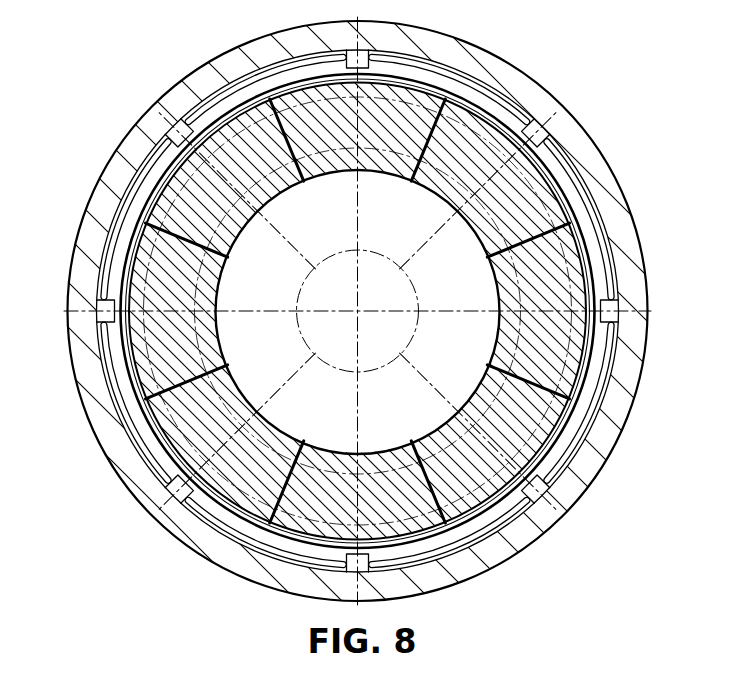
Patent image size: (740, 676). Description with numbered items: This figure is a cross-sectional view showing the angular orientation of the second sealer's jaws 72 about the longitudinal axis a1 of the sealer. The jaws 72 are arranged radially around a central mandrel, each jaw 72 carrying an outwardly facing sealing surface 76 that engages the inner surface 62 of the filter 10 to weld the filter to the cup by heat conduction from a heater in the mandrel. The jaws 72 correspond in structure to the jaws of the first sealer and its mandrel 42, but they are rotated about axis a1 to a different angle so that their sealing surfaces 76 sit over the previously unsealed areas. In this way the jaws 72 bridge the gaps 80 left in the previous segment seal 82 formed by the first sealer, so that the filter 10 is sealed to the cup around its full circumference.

The filter 10 is at (370, 338).
The mandrel 42 is at (493, 56).
The inner surface of filter 62 is at (275, 55).
The jaws 72 is at (170, 197).
The sealing surfaces 76 is at (147, 217).
The gaps 80 is at (193, 100).
The segment seal 82 is at (227, 73).
The longitudinal axis a1 is at (358, 311).